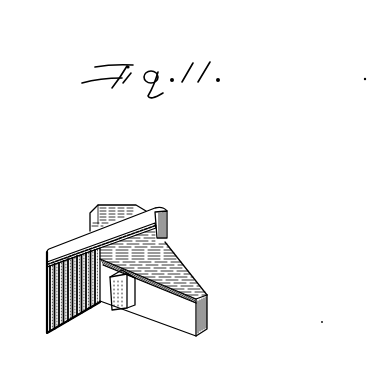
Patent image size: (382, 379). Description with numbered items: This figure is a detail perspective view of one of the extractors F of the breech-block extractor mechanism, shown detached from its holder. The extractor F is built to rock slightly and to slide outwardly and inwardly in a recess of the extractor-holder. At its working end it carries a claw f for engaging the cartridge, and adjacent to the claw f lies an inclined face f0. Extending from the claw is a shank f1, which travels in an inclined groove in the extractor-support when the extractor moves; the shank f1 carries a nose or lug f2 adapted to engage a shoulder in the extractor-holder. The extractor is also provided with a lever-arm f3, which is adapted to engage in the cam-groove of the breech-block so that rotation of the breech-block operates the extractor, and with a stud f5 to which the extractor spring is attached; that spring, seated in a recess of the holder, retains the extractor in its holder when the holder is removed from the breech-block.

The extractor F is at (210, 256).
The claw f is at (168, 213).
The inclined face f0 is at (118, 204).
The shank f1 is at (72, 248).
The nose or lug f2 is at (47, 317).
The lever-arm f3 is at (207, 294).
The stud f5 is at (128, 292).